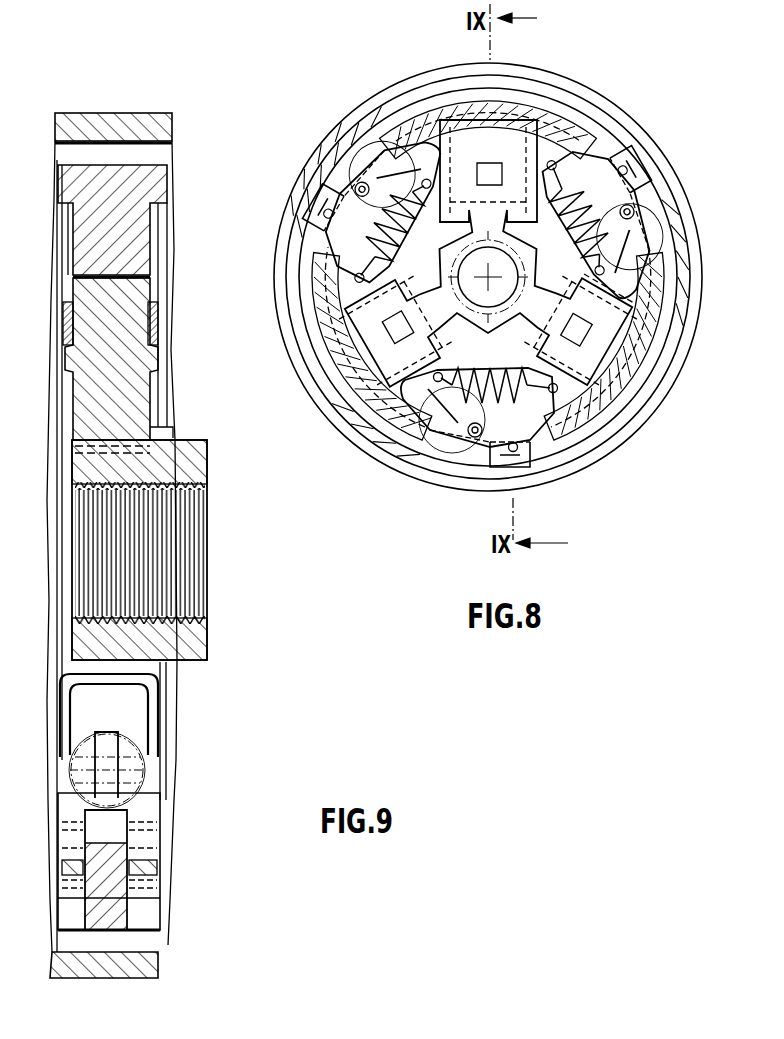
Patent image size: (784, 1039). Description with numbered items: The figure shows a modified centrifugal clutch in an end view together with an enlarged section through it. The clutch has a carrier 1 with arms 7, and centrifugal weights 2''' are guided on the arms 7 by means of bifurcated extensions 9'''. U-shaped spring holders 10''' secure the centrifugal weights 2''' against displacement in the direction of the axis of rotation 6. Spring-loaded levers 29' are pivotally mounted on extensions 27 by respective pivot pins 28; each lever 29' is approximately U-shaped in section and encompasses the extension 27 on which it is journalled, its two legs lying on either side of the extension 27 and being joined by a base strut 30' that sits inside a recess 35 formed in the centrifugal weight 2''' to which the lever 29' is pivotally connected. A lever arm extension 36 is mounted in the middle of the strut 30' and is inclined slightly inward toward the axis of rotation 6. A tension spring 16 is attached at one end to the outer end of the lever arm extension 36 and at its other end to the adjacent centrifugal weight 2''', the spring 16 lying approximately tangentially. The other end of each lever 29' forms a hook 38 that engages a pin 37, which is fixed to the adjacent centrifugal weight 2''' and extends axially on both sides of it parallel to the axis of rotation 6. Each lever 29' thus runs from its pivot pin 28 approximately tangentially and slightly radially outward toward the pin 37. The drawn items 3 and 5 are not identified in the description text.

In FIG. 8, the carrier 1 is at (583, 278).
In FIG. 9, the carrier 1 is at (188, 447).
In FIG. 8, the centrifugal weight 2''' is at (488, 261).
In FIG. 9, the centrifugal weight 2''' is at (130, 559).
In FIG. 9, the cover plate 3 is at (112, 124).
In FIG. 8, the hub body 5 is at (511, 266).
In FIG. 8, the axis of rotation 6 is at (486, 276).
In FIG. 8, the arm 7 is at (650, 352).
In FIG. 9, the arm 7 is at (132, 305).
In FIG. 8, the bifurcated extension 9''' is at (488, 286).
In FIG. 8, the U-shaped spring holder 10''' is at (501, 272).
In FIG. 9, the U-shaped spring holder 10''' is at (155, 721).
In FIG. 8, the tension spring 16 is at (445, 398).
In FIG. 9, the tension spring 16 is at (125, 762).
In FIG. 8, the extension 27 is at (350, 160).
In FIG. 8, the pivot pin 28 is at (352, 187).
In FIG. 9, the pivot pin 28 is at (150, 857).
In FIG. 8, the spring-loaded lever 29' is at (470, 272).
In FIG. 9, the spring-loaded lever 29' is at (139, 829).
In FIG. 9, the base strut 30' is at (151, 855).
In FIG. 8, the recess 35 is at (372, 146).
In FIG. 8, the lever arm extension 36 is at (411, 172).
In FIG. 9, the lever arm extension 36 is at (107, 778).
In FIG. 8, the pin 37 is at (330, 210).
In FIG. 9, the pin 37 is at (150, 888).
In FIG. 8, the hook 38 is at (320, 217).